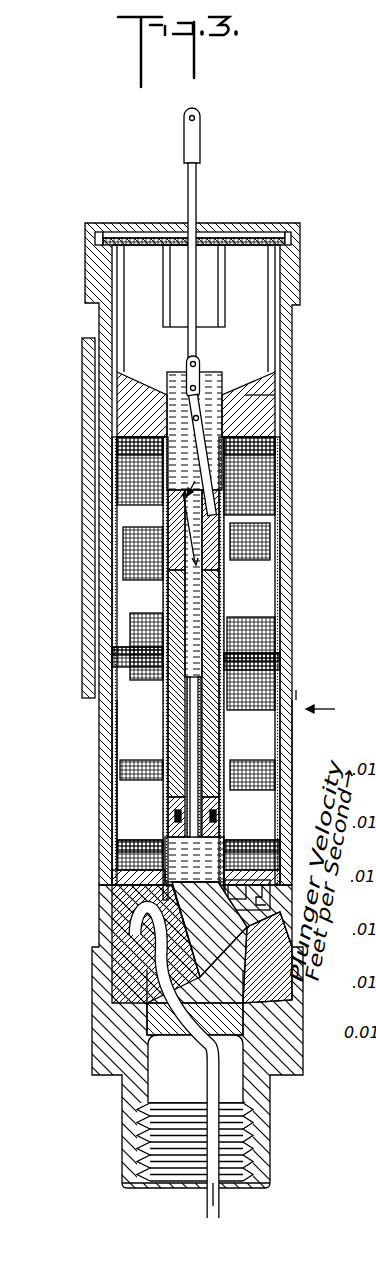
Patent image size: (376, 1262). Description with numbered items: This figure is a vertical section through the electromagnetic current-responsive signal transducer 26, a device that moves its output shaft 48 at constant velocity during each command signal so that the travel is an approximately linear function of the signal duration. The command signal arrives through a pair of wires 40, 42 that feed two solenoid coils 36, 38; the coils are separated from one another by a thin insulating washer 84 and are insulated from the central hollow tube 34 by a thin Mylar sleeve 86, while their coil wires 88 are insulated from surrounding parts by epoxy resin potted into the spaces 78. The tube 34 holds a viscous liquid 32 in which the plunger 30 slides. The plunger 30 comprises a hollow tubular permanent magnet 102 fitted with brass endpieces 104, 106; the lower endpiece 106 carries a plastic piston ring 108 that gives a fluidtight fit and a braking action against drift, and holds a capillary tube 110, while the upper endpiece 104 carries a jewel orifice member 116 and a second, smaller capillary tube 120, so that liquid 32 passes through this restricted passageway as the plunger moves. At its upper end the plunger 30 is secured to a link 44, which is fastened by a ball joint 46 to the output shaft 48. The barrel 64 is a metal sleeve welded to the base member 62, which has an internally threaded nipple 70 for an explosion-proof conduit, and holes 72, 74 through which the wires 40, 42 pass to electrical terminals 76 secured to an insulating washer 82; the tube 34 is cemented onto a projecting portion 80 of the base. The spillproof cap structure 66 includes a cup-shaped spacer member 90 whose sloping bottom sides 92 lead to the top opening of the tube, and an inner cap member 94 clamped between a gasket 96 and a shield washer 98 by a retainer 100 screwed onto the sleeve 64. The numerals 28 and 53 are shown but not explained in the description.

The signal transducer 26 is at (375, 724).
The housing assembly 28 is at (296, 694).
The plunger 30 is at (227, 515).
The viscous liquid 32 is at (207, 388).
The hollow tube 34 is at (168, 584).
The solenoid coil 36 is at (112, 550).
The solenoid coil 38 is at (112, 722).
The wire 40 is at (206, 1205).
The wire 42 is at (219, 1197).
The link 44 is at (248, 437).
The ball joint 46 is at (250, 398).
The output shaft 48 is at (197, 196).
The outer sleeve 53 is at (88, 603).
The base member 62 is at (96, 1010).
The barrel 64 is at (293, 745).
The cap structure 66 is at (298, 223).
The internally threaded nipple 70 is at (262, 1142).
The hole 72 is at (262, 975).
The hole 74 is at (115, 940).
The electrical terminal 76 is at (258, 950).
The spaces 78 is at (117, 440).
The projecting portion 80 is at (193, 878).
The washer 82 is at (234, 866).
The insulating washer 84 is at (112, 667).
The sleeve 86 is at (163, 604).
The wires 88 is at (112, 452).
The spacer member 90 is at (132, 380).
The bottom sides 92 is at (236, 386).
The inner cap member 94 is at (163, 290).
The gasket 96 is at (122, 248).
The shield washer 98 is at (140, 232).
The retainer 100 is at (93, 240).
The permanent magnet 102 is at (167, 722).
The upper endpiece 104 is at (168, 510).
The lower endpiece 106 is at (168, 820).
The piston ring 108 is at (166, 810).
The capillary tube 110 is at (200, 722).
The jewel orifice member 116 is at (183, 481).
The second capillary tube 120 is at (165, 540).